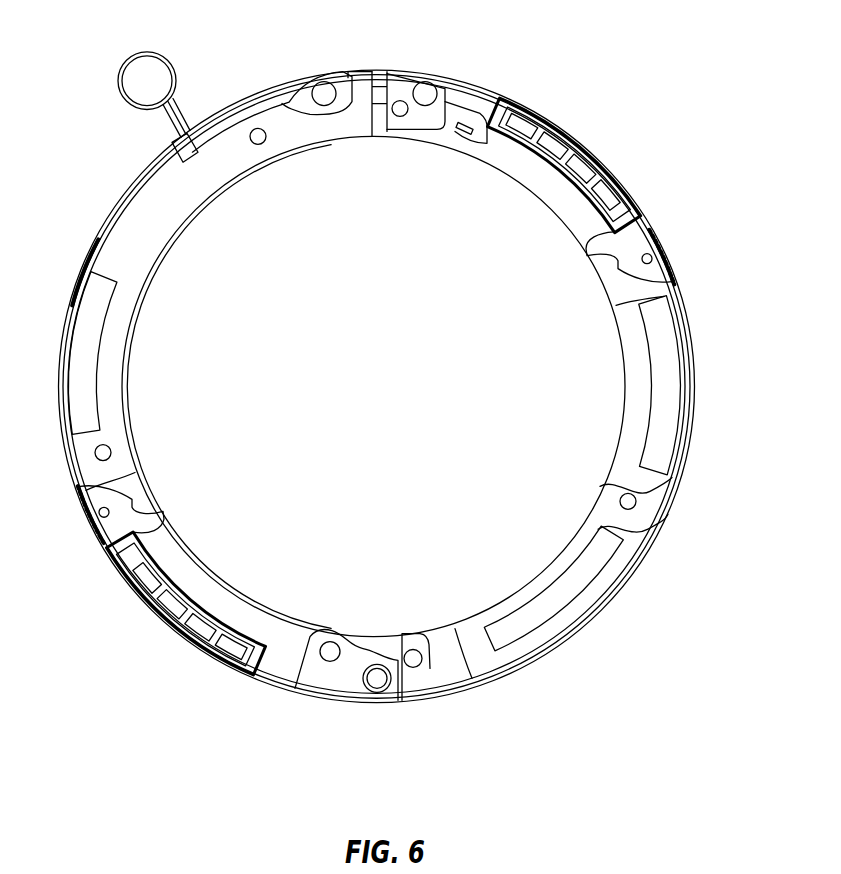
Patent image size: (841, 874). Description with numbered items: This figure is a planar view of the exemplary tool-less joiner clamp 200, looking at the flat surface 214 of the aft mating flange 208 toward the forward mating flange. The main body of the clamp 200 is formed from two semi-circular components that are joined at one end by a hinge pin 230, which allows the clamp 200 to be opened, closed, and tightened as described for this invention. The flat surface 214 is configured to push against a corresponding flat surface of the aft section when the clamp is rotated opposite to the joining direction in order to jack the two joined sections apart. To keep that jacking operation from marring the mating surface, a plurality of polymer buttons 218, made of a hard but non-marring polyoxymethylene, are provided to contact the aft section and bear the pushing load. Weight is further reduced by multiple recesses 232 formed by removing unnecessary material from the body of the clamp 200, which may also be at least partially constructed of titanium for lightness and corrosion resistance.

The tool-less joiner clamp 200 is at (716, 80).
The aft mating flange 208 is at (157, 194).
The flat surface 214 is at (128, 238).
The polymer buttons 218 is at (400, 115).
The hinge pin 230 is at (378, 692).
The recesses 232 is at (670, 382).